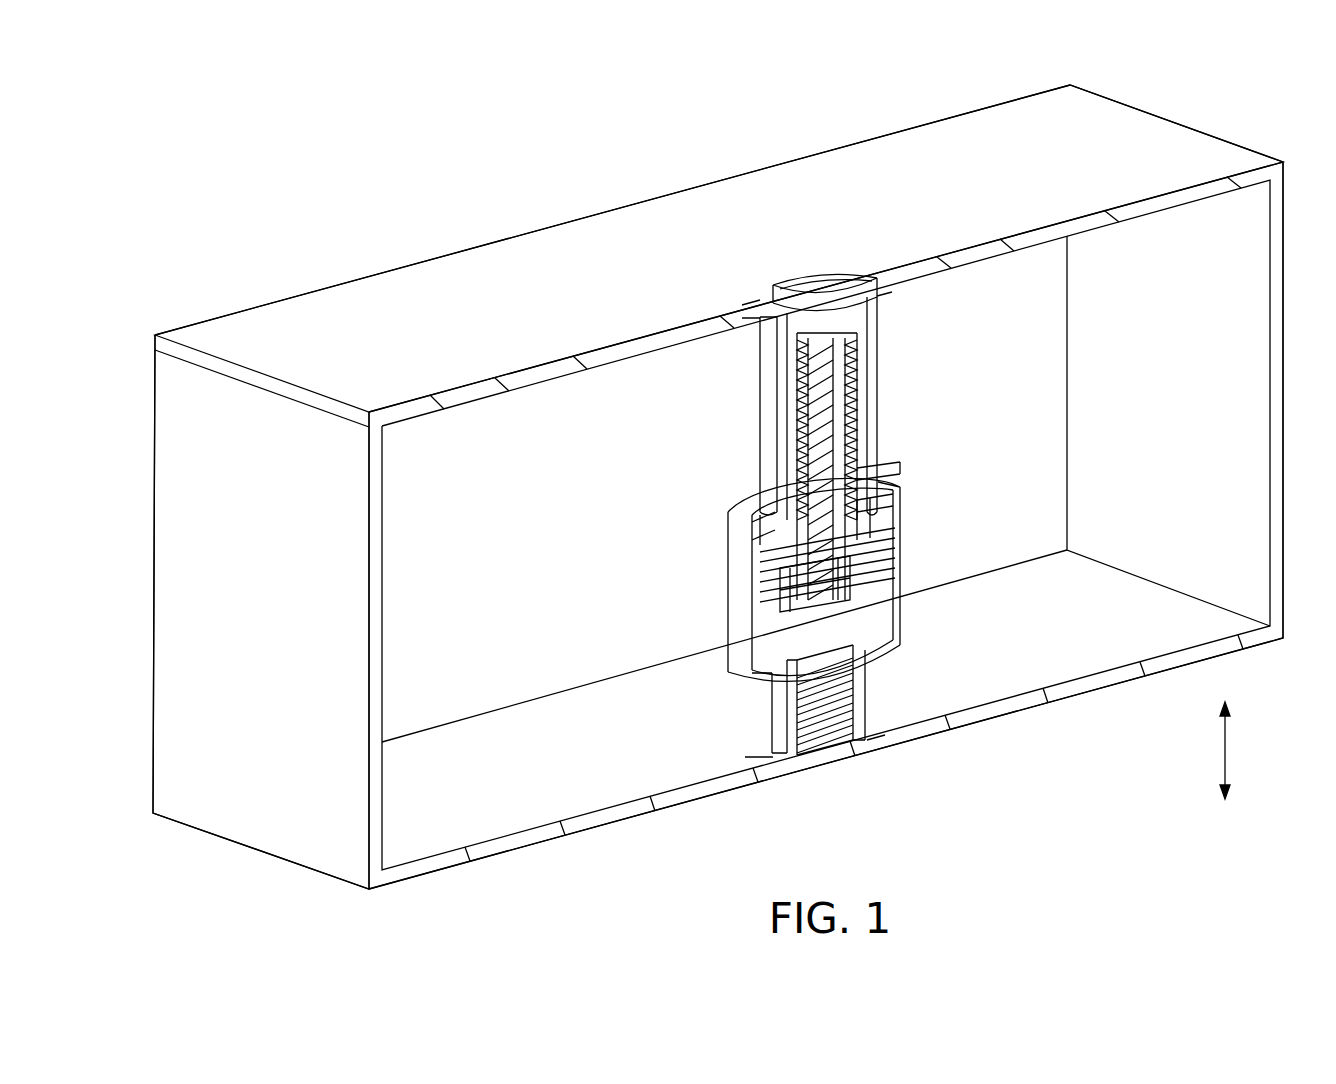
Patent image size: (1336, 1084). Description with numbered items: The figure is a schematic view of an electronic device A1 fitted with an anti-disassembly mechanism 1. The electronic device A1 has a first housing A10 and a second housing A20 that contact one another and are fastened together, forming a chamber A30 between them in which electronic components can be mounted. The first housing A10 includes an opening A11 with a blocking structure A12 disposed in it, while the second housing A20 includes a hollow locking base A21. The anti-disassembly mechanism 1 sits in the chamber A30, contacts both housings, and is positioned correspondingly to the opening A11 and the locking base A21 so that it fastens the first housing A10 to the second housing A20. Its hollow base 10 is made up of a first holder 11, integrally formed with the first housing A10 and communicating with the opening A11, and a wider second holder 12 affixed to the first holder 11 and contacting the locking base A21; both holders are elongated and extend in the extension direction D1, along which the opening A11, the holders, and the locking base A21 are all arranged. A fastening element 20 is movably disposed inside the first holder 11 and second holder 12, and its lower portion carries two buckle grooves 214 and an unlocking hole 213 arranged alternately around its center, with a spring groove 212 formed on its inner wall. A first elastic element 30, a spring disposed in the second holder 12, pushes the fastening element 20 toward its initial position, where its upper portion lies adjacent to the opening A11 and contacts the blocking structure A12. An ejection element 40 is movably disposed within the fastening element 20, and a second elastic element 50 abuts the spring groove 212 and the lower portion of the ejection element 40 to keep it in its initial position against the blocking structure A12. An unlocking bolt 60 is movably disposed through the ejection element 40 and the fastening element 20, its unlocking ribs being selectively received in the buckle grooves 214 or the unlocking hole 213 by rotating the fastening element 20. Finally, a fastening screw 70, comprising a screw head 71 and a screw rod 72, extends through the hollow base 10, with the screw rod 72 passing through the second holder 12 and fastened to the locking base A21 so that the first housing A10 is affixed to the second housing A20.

The electronic device A1 is at (1278, 96).
The first housing A10 is at (452, 285).
The opening A11 is at (790, 287).
The blocking structure A12 is at (842, 303).
The second housing A20 is at (173, 640).
The locking base A21 is at (777, 710).
The chamber A30 is at (530, 576).
The anti-disassembly mechanism 1 is at (800, 513).
The hollow base 10 is at (877, 407).
The first holder 11 is at (770, 437).
The second holder 12 is at (735, 643).
The fastening element 20 is at (753, 545).
The spring groove 212 is at (865, 500).
The unlocking hole 213 is at (800, 565).
The buckle grooves 214 is at (795, 538).
The first elastic element 30 is at (860, 563).
The ejection element 40 is at (867, 340).
The second elastic element 50 is at (858, 450).
The unlocking bolt 60 is at (830, 390).
The fastening screw 70 is at (917, 754).
The screw head 71 is at (867, 650).
The screw rod 72 is at (845, 706).
The extension direction D1 is at (1251, 750).